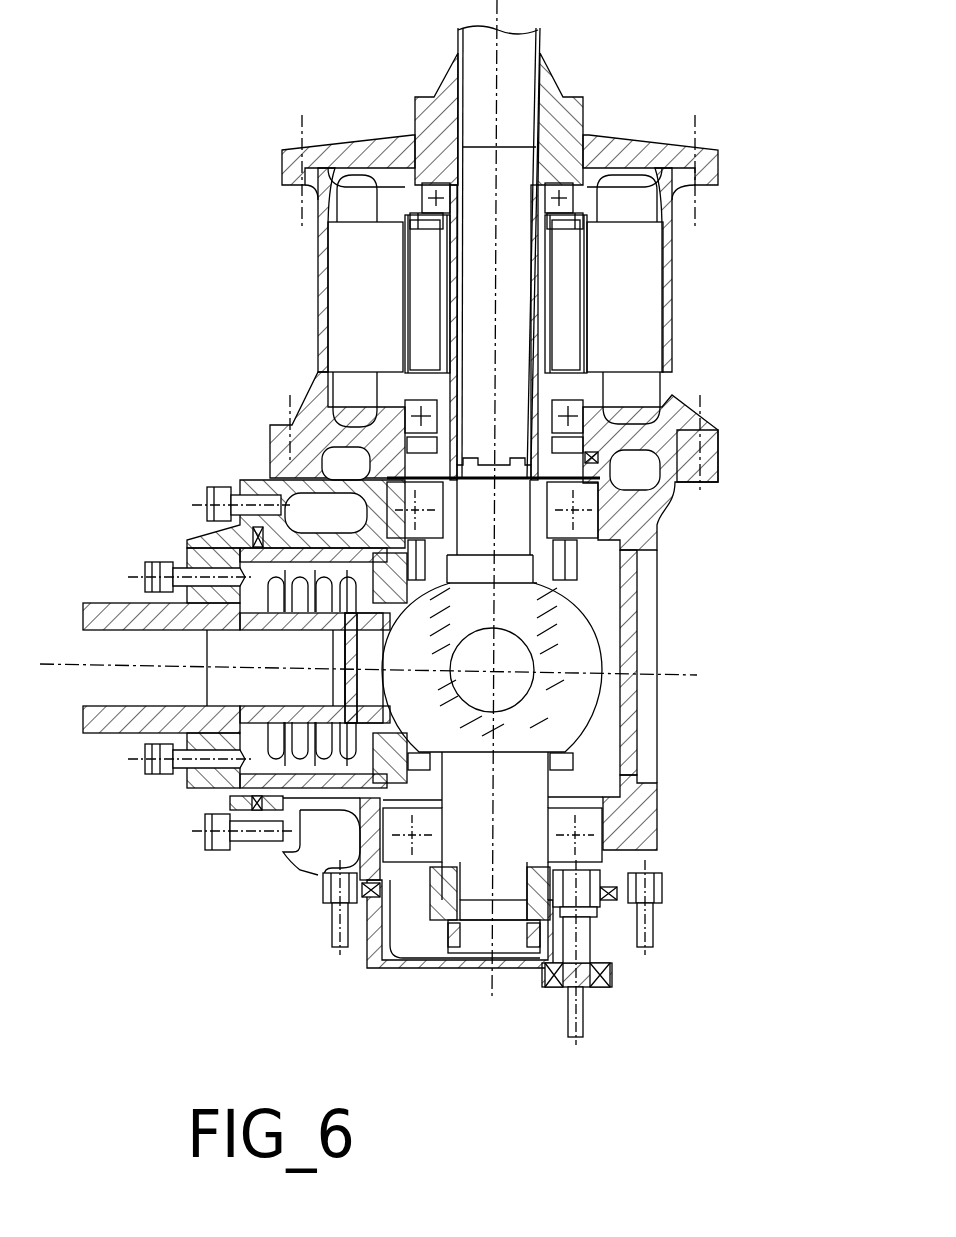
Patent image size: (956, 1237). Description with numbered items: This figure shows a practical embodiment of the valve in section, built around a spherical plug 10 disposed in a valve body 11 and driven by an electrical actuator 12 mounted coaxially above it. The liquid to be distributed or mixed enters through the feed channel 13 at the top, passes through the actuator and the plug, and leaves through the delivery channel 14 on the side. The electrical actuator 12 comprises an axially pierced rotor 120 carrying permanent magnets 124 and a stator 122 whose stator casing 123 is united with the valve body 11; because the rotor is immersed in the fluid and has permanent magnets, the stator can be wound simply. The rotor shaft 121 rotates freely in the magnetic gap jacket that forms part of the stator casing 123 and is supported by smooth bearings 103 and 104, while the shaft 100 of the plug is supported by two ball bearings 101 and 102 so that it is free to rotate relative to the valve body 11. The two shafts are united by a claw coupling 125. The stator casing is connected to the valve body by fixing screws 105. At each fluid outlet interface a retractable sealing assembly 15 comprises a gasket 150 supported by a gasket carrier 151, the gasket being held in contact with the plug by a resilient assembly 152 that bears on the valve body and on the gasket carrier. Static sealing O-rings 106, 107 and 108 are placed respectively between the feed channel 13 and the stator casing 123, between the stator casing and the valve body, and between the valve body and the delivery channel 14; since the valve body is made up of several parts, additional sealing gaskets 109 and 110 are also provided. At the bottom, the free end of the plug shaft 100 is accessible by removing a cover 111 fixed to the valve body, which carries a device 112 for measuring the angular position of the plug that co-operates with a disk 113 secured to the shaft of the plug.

The spherical plug 10 is at (565, 722).
The valve body 11 is at (712, 465).
The electrical actuator 12 is at (481, 359).
The feed channel 13 is at (572, 100).
The delivery channel 14 is at (105, 602).
The sealing assembly 15 is at (200, 803).
The shaft of the plug 100 is at (478, 935).
The ball bearing 101 is at (592, 826).
The ball bearing 102 is at (590, 523).
The smooth bearing 103 is at (572, 160).
The smooth bearing 104 is at (585, 412).
The fixing screws 105 is at (355, 500).
The static sealing O-ring 106 is at (452, 100).
The static sealing O-ring 107 is at (286, 505).
The static sealing O-ring 108 is at (192, 712).
The additional sealing gasket 109 is at (253, 548).
The additional sealing gasket 110 is at (375, 902).
The cover 111 is at (540, 965).
The device for measuring the angular position of the plug 112 is at (580, 1008).
The disk 113 is at (425, 925).
The rotor 120 is at (420, 222).
The shaft of the rotor 121 is at (430, 148).
The stator 122 is at (648, 272).
The stator casing 123 is at (322, 425).
The permanent magnets 124 is at (428, 302).
The claw coupling 125 is at (500, 466).
The gasket 150 is at (385, 708).
The gasket carrier 151 is at (355, 628).
The resilient assembly 152 is at (282, 715).